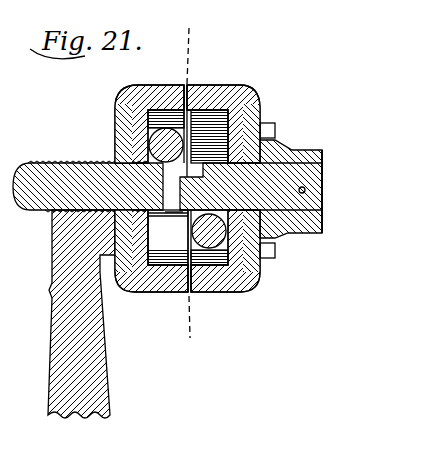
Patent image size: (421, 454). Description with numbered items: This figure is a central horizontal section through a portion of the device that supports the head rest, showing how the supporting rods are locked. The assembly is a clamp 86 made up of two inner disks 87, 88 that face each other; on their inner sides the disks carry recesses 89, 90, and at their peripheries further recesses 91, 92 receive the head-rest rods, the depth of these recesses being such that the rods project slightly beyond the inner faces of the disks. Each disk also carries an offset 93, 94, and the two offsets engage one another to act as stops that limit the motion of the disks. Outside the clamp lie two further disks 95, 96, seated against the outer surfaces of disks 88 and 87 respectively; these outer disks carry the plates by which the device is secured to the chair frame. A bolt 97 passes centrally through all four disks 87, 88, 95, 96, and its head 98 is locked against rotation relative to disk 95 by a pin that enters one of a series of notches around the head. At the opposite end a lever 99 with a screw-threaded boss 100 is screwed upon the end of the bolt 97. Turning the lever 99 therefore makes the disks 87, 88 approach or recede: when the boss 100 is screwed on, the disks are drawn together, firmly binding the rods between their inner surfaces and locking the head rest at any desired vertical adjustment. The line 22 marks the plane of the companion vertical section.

The section line 22 is at (191, 186).
The clamp 86 is at (173, 113).
The disk 87 is at (169, 284).
The disk 88 is at (213, 285).
The recess 89 is at (168, 237).
The recess 90 is at (262, 112).
The recess 91 is at (195, 108).
The recess 92 is at (196, 270).
The offset 93 is at (193, 187).
The offset 94 is at (174, 215).
The disk 95 is at (252, 96).
The disk 96 is at (126, 97).
The bolt 97 is at (272, 258).
The head 98 is at (323, 234).
The lever 99 is at (68, 314).
The screw-threaded boss 100 is at (53, 240).